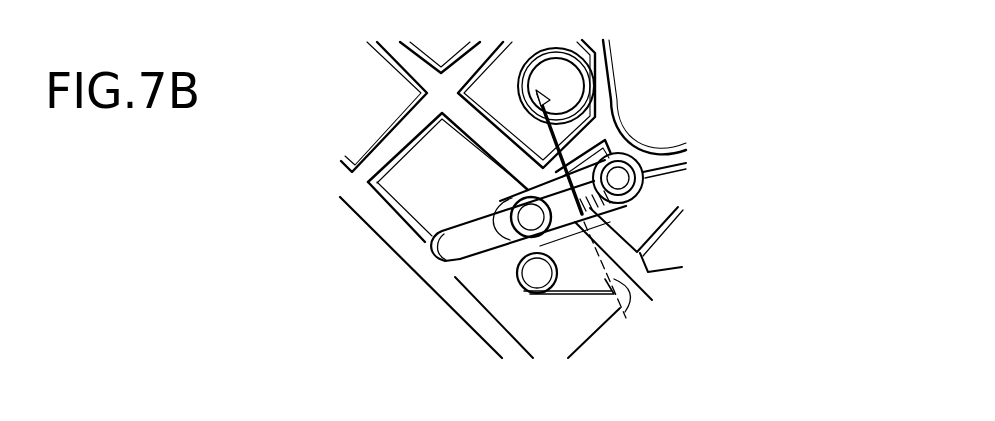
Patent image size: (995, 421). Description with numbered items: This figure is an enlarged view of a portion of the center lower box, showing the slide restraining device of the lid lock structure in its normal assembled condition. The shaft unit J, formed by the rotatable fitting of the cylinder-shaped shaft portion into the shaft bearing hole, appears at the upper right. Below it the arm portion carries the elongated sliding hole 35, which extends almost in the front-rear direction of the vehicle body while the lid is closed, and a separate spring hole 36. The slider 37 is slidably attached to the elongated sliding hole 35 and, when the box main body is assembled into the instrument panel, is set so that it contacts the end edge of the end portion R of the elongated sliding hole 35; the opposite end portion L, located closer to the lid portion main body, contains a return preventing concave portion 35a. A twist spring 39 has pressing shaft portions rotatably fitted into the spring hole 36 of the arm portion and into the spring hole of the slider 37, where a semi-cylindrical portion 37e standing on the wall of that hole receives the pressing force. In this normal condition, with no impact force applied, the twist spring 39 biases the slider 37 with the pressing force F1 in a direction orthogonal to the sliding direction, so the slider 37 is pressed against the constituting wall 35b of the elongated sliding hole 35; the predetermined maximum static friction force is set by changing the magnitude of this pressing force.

The elongated sliding hole 35 is at (464, 263).
The return preventing concave portion 35a is at (447, 268).
The constituting wall 35b is at (545, 181).
The spring hole 36 is at (615, 292).
The slider 37 is at (585, 201).
The semi-cylindrical portion 37e is at (596, 217).
The twist spring 39 is at (545, 298).
The shaft unit J is at (596, 78).
The end portion L is at (420, 258).
The end portion R is at (656, 197).
The pressing force F1 is at (581, 195).